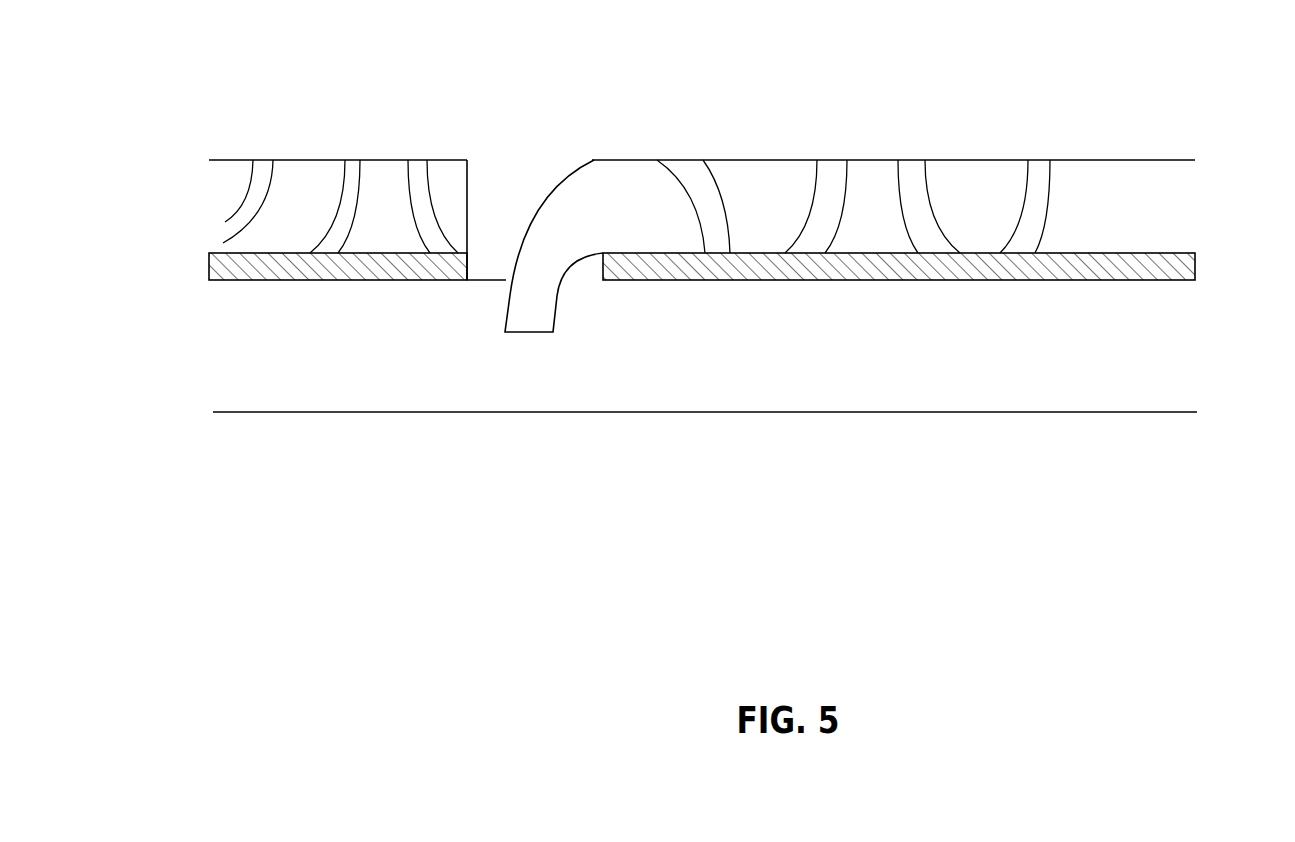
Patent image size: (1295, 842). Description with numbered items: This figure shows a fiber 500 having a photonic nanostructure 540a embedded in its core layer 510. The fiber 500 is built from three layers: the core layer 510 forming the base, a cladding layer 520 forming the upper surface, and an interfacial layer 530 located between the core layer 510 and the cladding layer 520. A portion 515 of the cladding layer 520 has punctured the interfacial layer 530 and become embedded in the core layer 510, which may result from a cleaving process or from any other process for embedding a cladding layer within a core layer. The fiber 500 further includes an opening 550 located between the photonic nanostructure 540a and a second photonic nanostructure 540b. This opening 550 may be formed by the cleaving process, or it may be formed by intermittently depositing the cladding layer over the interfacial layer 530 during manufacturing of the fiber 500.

The fiber 500 is at (338, 512).
The core layer 510 is at (1033, 353).
The portion of cladding layer 515 is at (540, 312).
The cladding layer 520 is at (1175, 160).
The interfacial layer 530 is at (210, 276).
The photonic nanostructure 540a is at (870, 190).
The photonic nanostructure 540b is at (284, 190).
The opening 550 is at (495, 192).